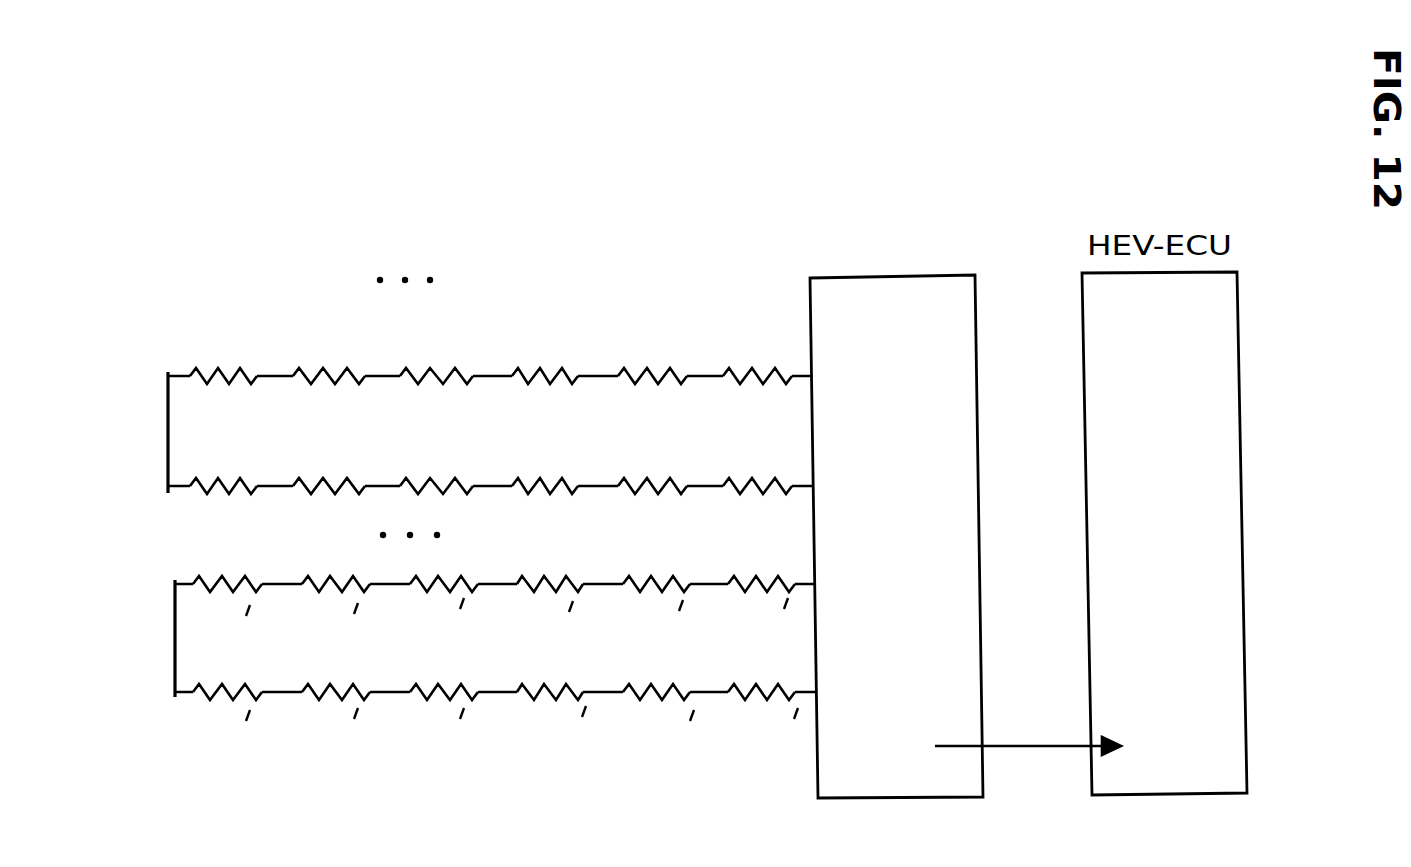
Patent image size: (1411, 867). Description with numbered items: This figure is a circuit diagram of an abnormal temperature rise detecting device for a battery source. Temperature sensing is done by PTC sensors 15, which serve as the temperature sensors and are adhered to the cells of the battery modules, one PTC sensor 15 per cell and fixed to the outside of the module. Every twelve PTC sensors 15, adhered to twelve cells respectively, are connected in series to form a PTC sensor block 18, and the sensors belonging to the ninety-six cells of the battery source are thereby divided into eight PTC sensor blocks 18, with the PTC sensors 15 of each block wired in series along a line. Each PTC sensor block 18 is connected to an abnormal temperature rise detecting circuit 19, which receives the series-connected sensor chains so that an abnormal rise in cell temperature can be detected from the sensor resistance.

The PTC sensor 15 is at (221, 329).
The PTC sensor block 18 is at (149, 453).
The abnormal temperature rise detecting circuit 19 is at (925, 578).